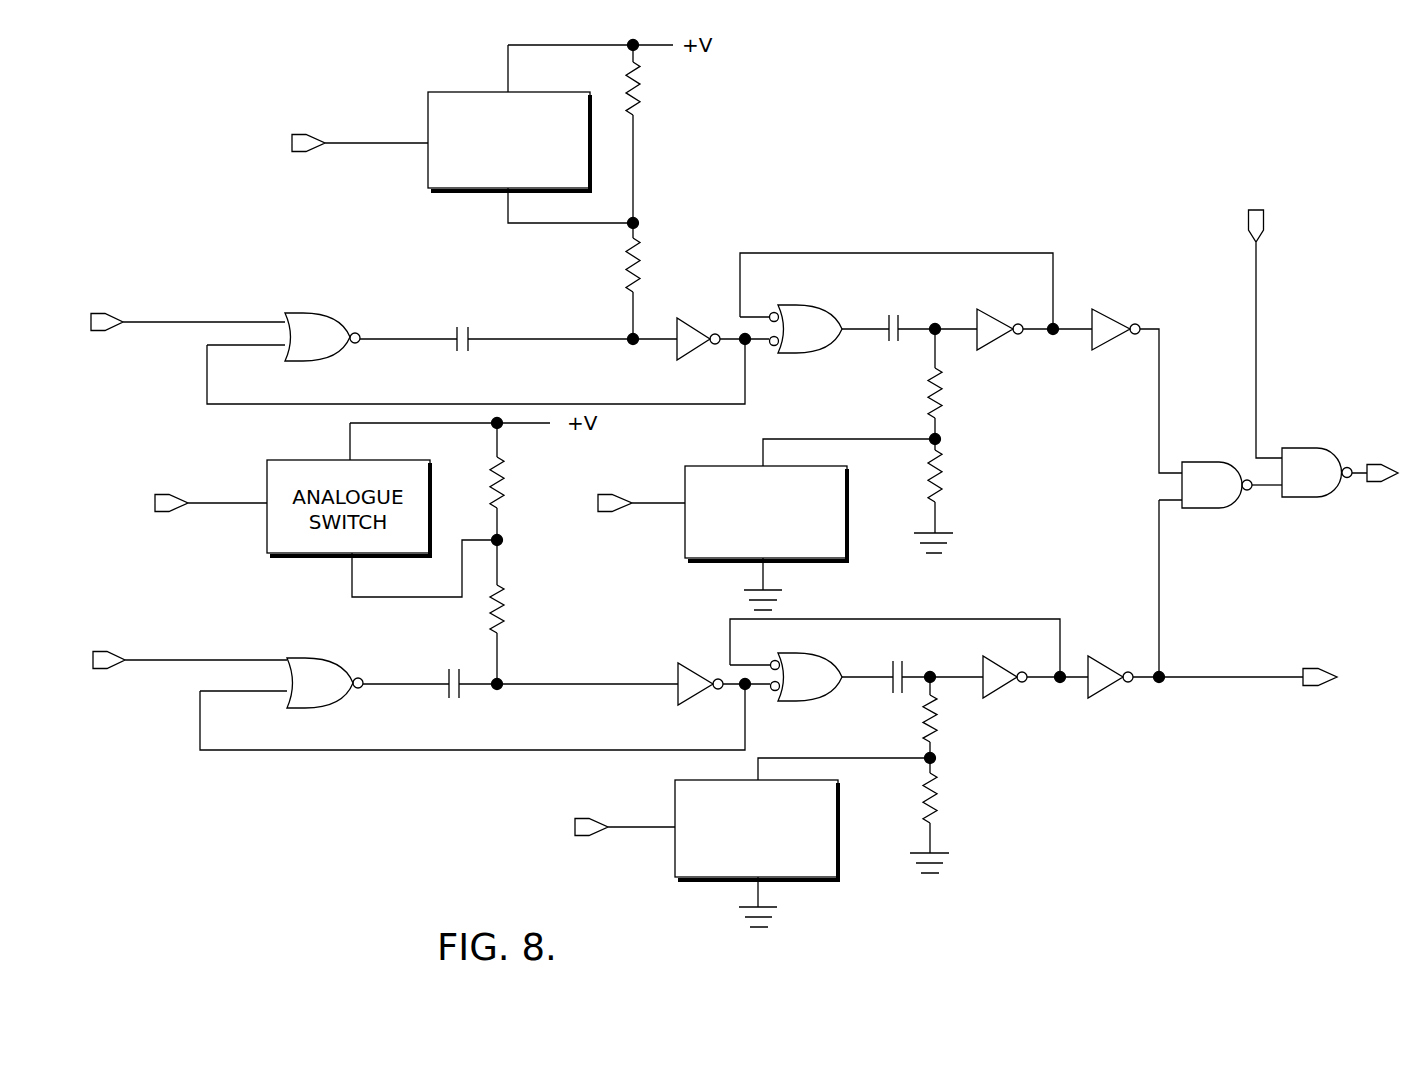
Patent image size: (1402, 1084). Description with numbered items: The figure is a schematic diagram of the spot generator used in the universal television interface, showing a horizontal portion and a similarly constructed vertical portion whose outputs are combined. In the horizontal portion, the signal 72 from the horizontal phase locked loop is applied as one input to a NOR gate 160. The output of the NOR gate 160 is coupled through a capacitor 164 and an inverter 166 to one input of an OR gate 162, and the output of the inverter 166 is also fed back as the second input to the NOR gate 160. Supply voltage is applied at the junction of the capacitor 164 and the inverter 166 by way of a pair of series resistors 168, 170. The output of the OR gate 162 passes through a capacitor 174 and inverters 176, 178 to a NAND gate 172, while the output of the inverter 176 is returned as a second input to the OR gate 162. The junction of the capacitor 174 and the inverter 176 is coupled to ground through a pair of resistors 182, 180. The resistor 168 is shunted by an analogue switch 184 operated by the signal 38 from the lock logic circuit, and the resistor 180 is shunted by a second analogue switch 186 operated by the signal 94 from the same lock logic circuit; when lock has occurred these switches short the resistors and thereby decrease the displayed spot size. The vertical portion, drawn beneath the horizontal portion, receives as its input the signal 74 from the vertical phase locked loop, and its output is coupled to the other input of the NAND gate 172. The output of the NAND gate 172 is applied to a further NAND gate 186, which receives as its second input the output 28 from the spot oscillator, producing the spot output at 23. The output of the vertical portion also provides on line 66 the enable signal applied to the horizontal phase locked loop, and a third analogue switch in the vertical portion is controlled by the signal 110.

The analogue switch 184 is at (481, 88).
The signal from lock logic circuit 38 is at (384, 142).
The resistor 168 is at (641, 89).
The resistor 170 is at (641, 269).
The signal from horizontal phase locked loop 72 is at (203, 318).
The NOR gate 160 is at (328, 319).
The capacitor 164 is at (462, 327).
The inverter 166 is at (686, 326).
The OR gate 162 is at (820, 313).
The capacitor 174 is at (898, 318).
The inverter 176 is at (985, 313).
The inverter 178 is at (1112, 318).
The output from spot oscillator 28 is at (1260, 322).
The NAND gate 172 is at (1193, 460).
The NAND gate / analogue switch 186 is at (1318, 448).
The output signal 23 is at (1354, 479).
The resistor 182 is at (943, 399).
The resistor 180 is at (945, 476).
The signal from lock logic circuit 94 is at (647, 498).
The signal from vertical phase locked loop 74 is at (212, 660).
The analogue switch control input 110 is at (632, 824).
The line carrying enable signal 66 is at (1233, 676).